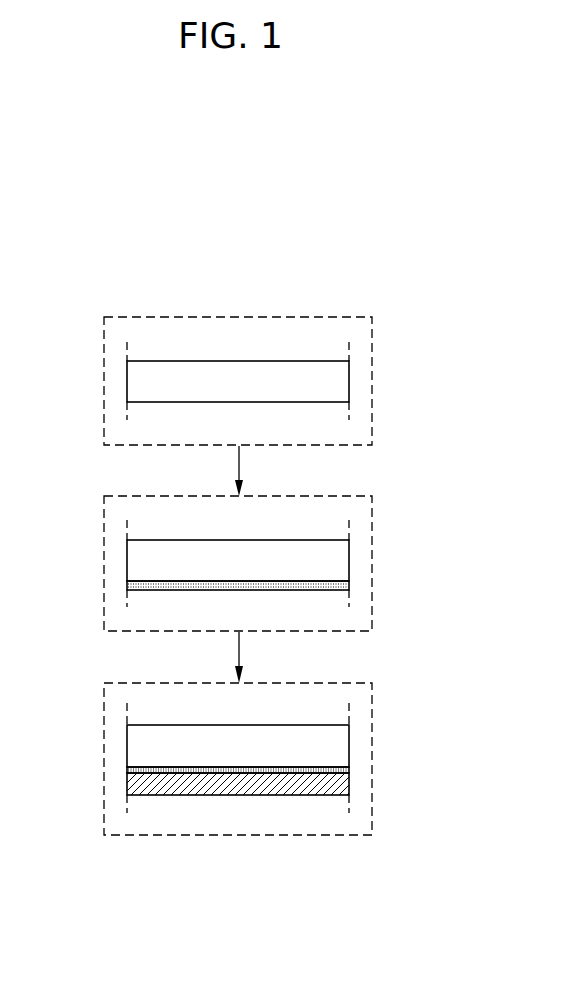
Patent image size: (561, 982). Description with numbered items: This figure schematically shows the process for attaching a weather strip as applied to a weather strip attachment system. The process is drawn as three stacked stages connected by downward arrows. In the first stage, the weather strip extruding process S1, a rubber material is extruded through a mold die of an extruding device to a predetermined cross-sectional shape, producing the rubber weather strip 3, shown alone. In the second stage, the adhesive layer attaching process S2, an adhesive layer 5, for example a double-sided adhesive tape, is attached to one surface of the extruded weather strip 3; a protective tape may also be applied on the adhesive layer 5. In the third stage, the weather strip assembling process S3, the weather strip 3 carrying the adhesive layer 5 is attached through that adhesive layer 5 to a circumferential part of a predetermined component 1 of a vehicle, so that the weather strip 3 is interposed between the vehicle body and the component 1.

The component 1 is at (138, 785).
The weather strip 3 is at (138, 379).
The adhesive layer 5 is at (140, 586).
The weather strip extruding process S1 is at (372, 380).
The adhesive layer attaching process S2 is at (372, 558).
The weather strip assembling process S3 is at (372, 757).